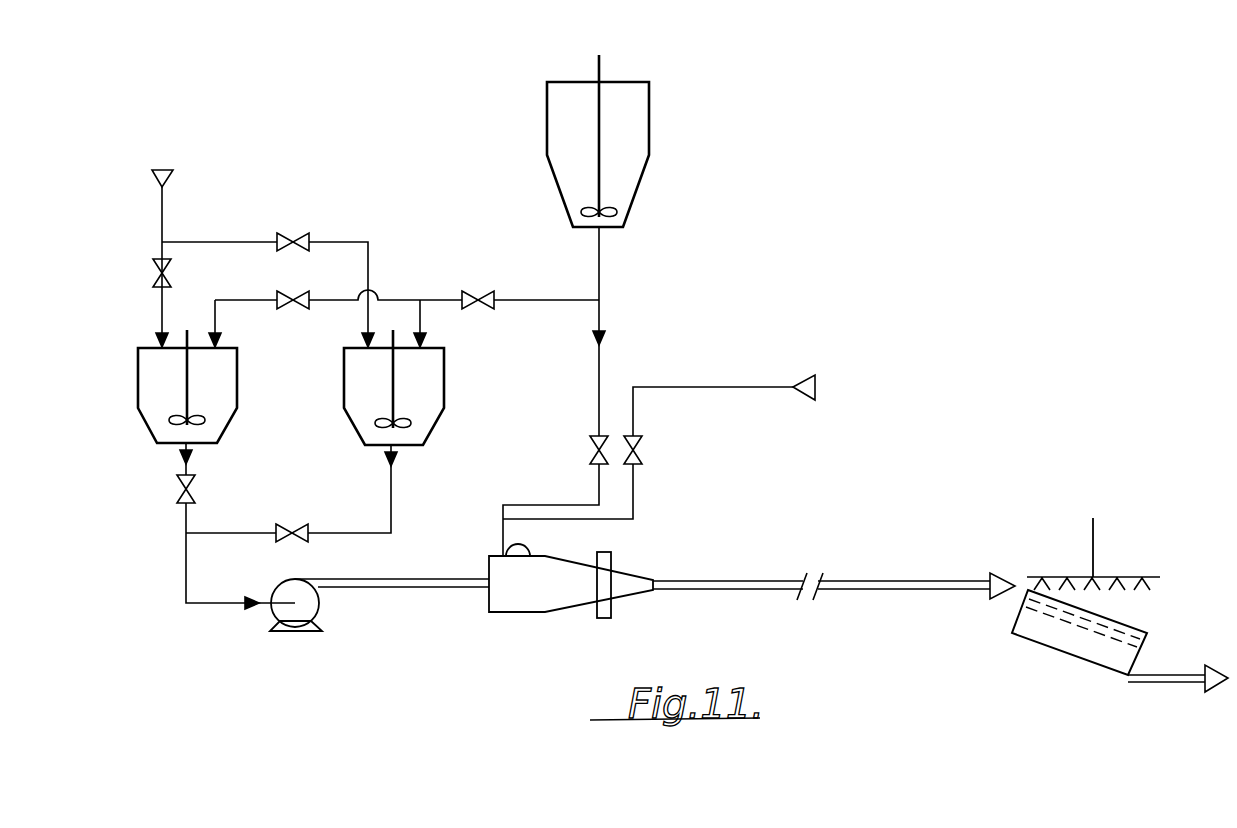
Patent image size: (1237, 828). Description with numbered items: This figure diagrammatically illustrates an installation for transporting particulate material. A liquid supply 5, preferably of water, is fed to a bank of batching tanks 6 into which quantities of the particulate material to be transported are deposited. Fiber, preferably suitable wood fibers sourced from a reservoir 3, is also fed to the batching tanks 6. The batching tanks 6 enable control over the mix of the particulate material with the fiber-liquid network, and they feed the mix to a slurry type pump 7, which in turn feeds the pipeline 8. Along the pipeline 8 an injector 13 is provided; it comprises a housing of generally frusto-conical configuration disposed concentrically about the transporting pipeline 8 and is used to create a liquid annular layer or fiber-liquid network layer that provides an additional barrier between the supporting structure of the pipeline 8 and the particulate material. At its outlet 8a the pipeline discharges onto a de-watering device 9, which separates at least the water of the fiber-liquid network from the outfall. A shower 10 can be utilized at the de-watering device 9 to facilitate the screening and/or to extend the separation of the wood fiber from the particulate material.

The reservoir 3 is at (631, 141).
The liquid supply 5 is at (168, 208).
The batching tanks 6 is at (358, 382).
The slurry type pump 7 is at (298, 617).
The pipeline 8 is at (450, 590).
The outlet 8a is at (695, 590).
The de-watering device 9 is at (1033, 633).
The shower 10 is at (1097, 545).
The injector 13 is at (569, 613).